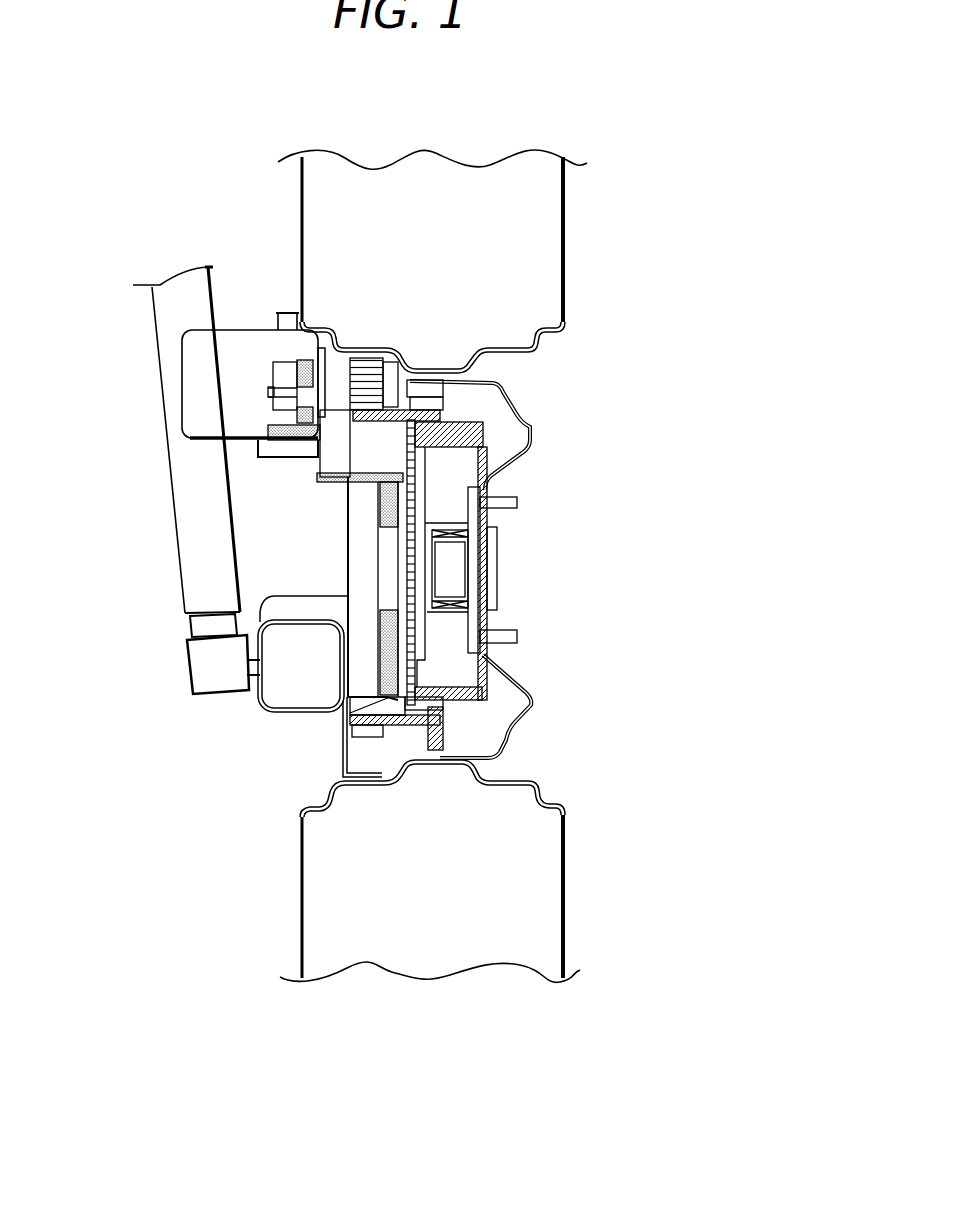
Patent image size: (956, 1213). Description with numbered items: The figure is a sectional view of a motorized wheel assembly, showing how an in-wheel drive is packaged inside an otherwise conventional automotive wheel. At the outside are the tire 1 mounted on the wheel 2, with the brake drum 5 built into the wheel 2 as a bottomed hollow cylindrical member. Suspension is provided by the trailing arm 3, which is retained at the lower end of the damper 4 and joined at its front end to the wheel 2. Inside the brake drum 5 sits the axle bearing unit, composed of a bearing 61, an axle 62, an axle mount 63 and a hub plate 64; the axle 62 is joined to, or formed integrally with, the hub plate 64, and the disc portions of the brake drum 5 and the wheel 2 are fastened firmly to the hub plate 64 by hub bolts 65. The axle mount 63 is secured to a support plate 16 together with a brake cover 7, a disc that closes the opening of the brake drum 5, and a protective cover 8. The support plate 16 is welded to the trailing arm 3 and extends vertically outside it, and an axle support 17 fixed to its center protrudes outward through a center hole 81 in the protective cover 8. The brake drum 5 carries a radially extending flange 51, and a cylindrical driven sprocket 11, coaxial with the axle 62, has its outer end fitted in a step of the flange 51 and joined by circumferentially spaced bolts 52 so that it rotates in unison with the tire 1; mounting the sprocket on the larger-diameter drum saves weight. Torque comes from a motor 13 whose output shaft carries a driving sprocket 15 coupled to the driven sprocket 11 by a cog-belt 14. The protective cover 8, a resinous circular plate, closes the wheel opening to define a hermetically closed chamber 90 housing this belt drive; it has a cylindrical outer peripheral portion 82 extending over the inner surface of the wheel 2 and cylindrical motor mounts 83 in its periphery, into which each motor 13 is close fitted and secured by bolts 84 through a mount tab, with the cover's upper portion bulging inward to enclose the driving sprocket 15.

The tire 1 is at (513, 947).
The wheel 2 is at (320, 807).
The trailing arm 3 is at (235, 698).
The damper 4 is at (197, 590).
The brake drum 5 is at (483, 477).
The brake cover 7 is at (453, 730).
The protective cover 8 is at (287, 683).
The driven sprocket 11 is at (423, 370).
The motor 13 is at (237, 343).
The cog-belt 14 is at (363, 447).
The driving sprocket 15 is at (367, 363).
The support plate 16 is at (347, 505).
The axle support 17 is at (387, 597).
The flange 51 is at (443, 427).
The bolts 52 is at (408, 390).
The bearing 61 is at (453, 598).
The axle 62 is at (453, 580).
The axle mount 63 is at (420, 653).
The hub plate 64 is at (473, 623).
The hub bolts 65 is at (503, 500).
The center hole 81 is at (388, 530).
The outer peripheral portion 82 is at (377, 753).
The motor mounts 83 is at (290, 412).
The bolts 84 is at (287, 398).
The chamber 90 is at (407, 743).